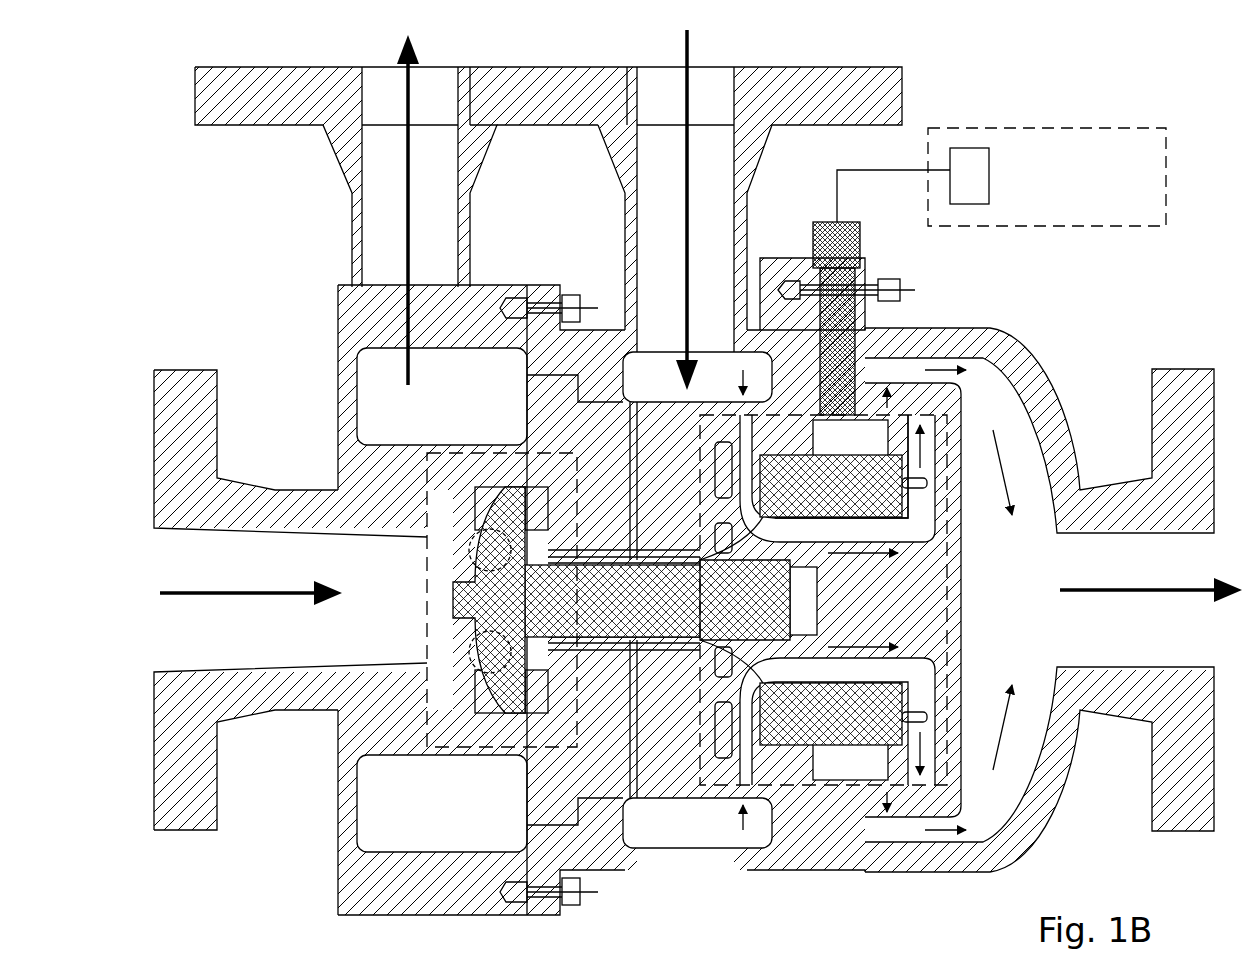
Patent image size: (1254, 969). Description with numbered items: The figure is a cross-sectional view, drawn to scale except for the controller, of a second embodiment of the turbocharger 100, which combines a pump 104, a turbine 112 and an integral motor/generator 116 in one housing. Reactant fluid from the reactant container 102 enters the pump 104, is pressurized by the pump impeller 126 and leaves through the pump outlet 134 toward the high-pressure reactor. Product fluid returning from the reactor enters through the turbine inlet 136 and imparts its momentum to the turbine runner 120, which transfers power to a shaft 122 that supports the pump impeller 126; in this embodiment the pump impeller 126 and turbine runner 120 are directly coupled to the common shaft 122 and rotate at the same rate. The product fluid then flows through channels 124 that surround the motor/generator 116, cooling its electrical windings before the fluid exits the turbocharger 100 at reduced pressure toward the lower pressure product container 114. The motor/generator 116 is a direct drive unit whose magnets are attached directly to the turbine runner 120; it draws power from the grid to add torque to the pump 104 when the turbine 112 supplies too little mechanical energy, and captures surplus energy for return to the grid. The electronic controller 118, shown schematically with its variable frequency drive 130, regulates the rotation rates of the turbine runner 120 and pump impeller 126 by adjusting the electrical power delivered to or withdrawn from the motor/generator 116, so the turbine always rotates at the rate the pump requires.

The turbocharger 100 is at (192, 203).
The reactant container 102 is at (221, 637).
The pump 104 is at (427, 565).
The turbine 112 is at (950, 603).
The product container 114 is at (1134, 630).
The motor/generator 116 is at (794, 499).
The controller 118 is at (1101, 185).
The turbine runner 120 is at (740, 640).
The shaft 122 is at (598, 612).
The channels 124 is at (920, 505).
The pump impeller 126 is at (523, 640).
The variable frequency drive 130 is at (989, 168).
The pump outlet 134 is at (254, 106).
The turbine inlet 136 is at (771, 108).